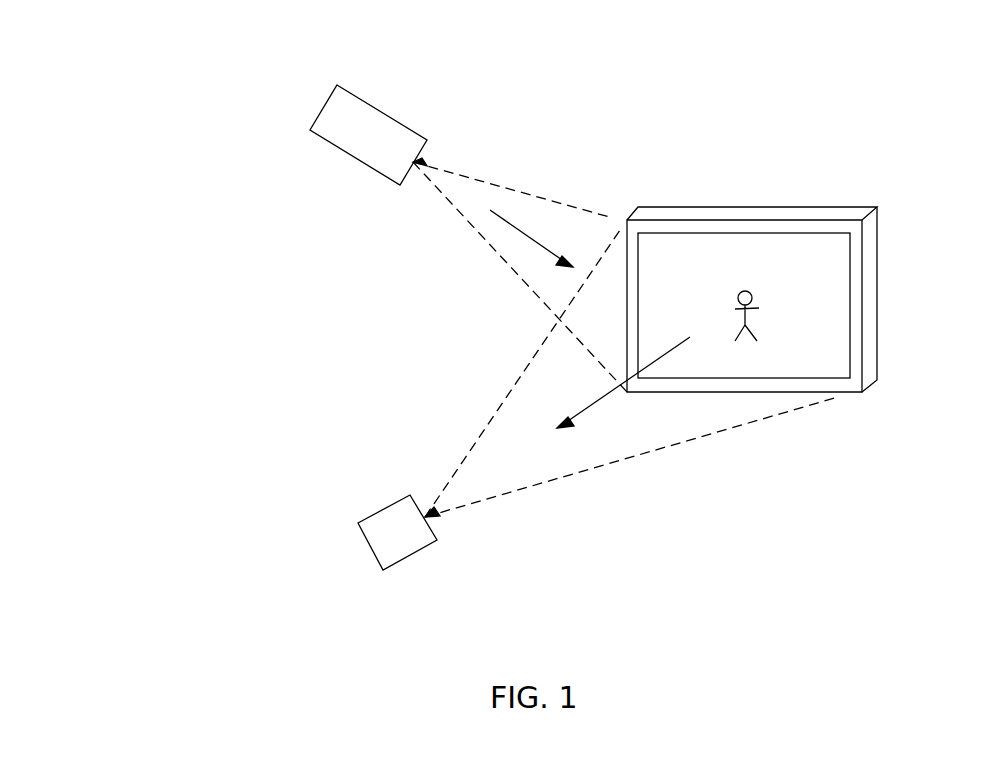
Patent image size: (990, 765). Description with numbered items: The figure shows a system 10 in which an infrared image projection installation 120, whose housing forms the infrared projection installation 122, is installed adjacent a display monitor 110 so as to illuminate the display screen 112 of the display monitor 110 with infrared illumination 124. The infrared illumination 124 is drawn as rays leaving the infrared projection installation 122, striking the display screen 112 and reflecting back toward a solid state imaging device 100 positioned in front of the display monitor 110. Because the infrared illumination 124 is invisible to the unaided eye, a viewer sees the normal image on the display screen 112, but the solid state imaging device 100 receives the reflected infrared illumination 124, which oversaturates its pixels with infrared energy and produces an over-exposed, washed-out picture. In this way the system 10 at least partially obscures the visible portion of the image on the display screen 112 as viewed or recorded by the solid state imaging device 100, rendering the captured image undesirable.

The system 10 is at (208, 343).
The solid state imaging device 100 is at (410, 558).
The display monitor 110 is at (870, 285).
The display screen 112 is at (832, 358).
The infrared image projection installation 120 is at (363, 100).
The infrared projection installation 122 is at (410, 128).
The infrared illumination 124 is at (525, 237).